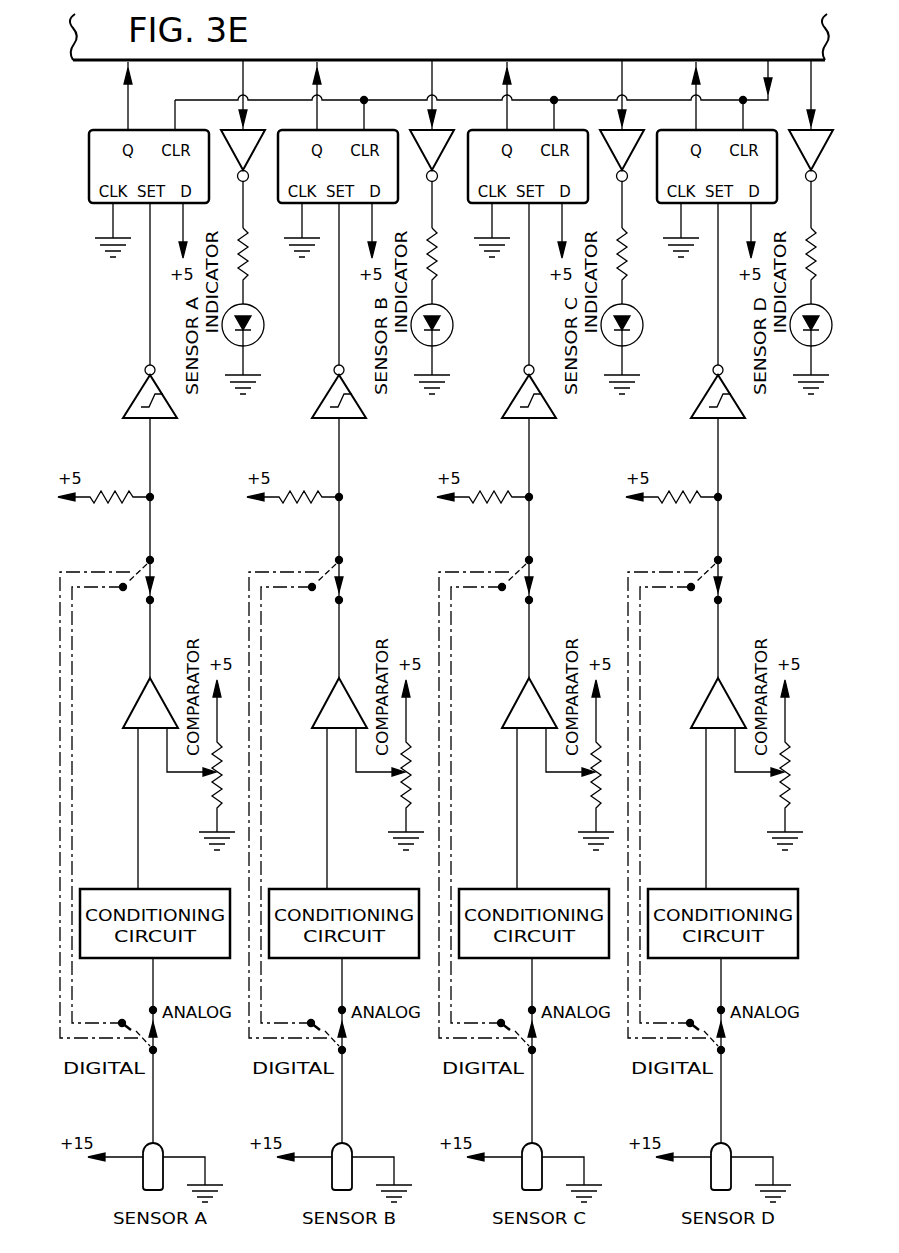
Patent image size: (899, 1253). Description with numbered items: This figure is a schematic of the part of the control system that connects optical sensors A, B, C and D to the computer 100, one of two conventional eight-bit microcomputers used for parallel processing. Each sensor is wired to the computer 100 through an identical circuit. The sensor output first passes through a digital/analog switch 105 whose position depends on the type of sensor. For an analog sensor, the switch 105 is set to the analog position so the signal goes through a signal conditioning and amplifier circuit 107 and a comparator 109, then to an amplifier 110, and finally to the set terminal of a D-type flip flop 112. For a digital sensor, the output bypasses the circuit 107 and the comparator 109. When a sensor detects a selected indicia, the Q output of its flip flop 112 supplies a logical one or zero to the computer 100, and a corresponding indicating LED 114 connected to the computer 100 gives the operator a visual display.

The computer 100 is at (702, 46).
The D-type flip flop 112 is at (102, 143).
The indicating LED 114 is at (264, 327).
The amplifier 110 is at (165, 420).
The digital/analog switch 105 is at (150, 560).
The comparator 109 is at (138, 700).
The signal conditioning and amplifier circuit 107 is at (204, 889).